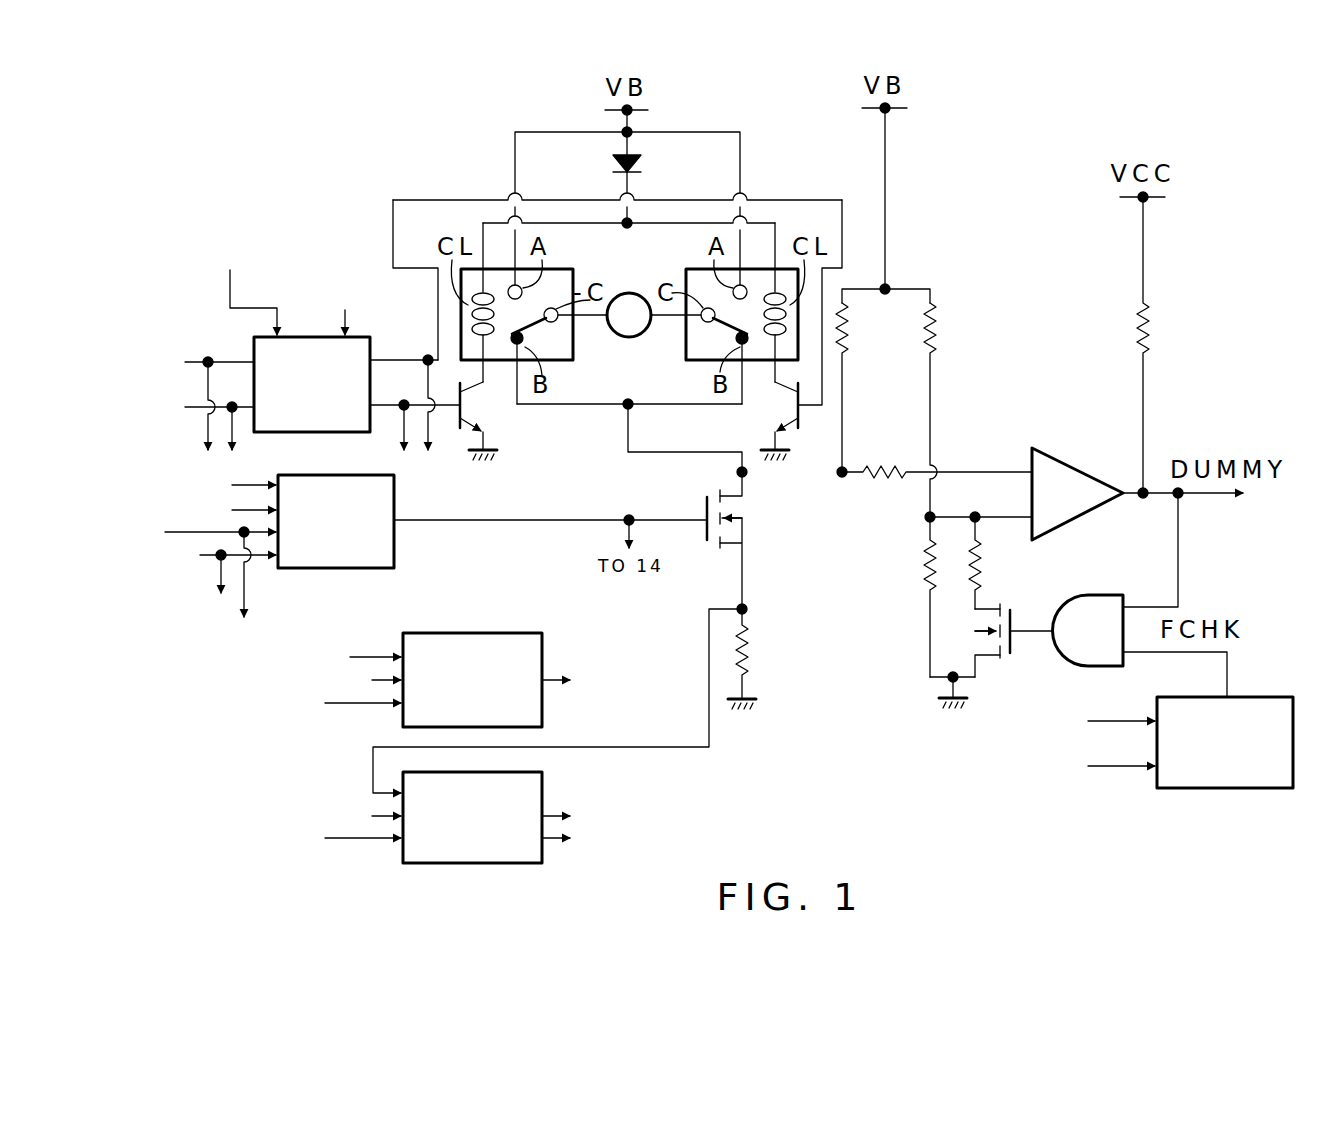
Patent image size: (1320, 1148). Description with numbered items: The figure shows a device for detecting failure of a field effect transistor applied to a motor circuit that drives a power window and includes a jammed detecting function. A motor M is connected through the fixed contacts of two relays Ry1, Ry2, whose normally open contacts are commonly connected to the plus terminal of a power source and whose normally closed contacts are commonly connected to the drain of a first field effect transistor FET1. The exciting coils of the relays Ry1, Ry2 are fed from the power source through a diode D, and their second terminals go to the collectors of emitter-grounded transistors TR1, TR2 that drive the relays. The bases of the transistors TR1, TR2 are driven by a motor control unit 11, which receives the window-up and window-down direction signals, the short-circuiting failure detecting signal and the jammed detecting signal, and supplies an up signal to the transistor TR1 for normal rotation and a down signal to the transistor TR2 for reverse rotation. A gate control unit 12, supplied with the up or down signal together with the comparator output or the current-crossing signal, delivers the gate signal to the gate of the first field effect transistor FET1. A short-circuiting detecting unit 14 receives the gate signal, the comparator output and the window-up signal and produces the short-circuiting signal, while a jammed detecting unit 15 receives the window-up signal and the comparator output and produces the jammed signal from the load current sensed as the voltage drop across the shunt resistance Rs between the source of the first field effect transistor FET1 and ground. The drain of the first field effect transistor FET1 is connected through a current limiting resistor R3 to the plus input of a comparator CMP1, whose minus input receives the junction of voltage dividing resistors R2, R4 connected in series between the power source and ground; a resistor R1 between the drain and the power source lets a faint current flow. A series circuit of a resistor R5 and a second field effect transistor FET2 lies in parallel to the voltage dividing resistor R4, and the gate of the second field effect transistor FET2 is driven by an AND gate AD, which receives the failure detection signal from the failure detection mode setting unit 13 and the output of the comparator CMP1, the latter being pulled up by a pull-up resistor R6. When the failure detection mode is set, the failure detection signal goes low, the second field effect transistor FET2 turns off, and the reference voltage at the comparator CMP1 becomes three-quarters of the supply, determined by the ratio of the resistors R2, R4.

The motor control unit 11 is at (254, 355).
The gate control unit 12 is at (361, 475).
The failure detection mode setting unit 13 is at (1235, 697).
The short-circuiting detecting unit 14 is at (485, 633).
The jammed detecting unit 15 is at (542, 782).
The diode D is at (636, 169).
The motor M is at (629, 315).
The relay Ry1 is at (542, 334).
The relay Ry2 is at (713, 334).
The transistor TR1 is at (485, 405).
The transistor TR2 is at (777, 407).
The first field effect transistor FET1 is at (735, 510).
The second field effect transistor FET2 is at (975, 622).
The comparator CMP1 is at (1055, 530).
The AND gate AD is at (1105, 594).
The resistor R1 is at (852, 340).
The voltage dividing resistor R2 is at (937, 340).
The current limiting resistor R3 is at (903, 458).
The voltage dividing resistor R4 is at (920, 573).
The resistor R5 is at (988, 550).
The pull-up resistor R6 is at (1152, 340).
The shunt resistance Rs is at (752, 666).